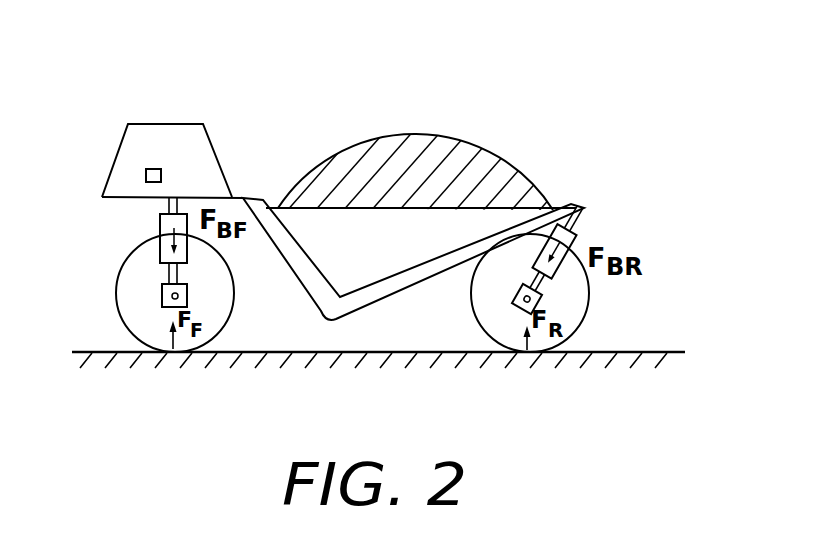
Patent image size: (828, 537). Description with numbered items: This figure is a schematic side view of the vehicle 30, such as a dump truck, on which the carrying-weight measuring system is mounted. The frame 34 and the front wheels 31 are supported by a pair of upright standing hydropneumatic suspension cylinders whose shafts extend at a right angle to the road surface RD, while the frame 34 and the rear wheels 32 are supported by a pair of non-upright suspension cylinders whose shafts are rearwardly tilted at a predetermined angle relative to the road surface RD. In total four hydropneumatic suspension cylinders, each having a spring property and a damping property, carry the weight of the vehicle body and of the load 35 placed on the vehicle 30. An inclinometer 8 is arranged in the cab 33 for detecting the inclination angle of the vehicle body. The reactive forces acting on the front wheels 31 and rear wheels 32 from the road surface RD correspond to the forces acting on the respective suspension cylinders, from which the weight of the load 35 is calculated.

The vehicle 30 is at (324, 118).
The cab 33 is at (135, 123).
The inclinometer 8 is at (145, 175).
The front wheels 31 is at (117, 310).
The rear wheels 32 is at (586, 318).
The frame 34 is at (583, 200).
The load 35 is at (485, 152).
The road surface RD is at (672, 352).